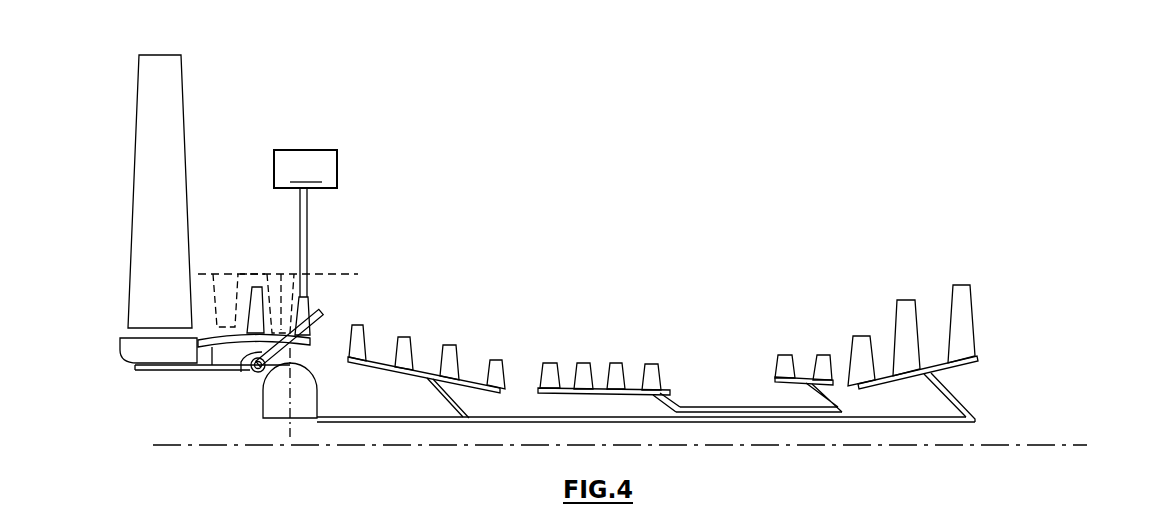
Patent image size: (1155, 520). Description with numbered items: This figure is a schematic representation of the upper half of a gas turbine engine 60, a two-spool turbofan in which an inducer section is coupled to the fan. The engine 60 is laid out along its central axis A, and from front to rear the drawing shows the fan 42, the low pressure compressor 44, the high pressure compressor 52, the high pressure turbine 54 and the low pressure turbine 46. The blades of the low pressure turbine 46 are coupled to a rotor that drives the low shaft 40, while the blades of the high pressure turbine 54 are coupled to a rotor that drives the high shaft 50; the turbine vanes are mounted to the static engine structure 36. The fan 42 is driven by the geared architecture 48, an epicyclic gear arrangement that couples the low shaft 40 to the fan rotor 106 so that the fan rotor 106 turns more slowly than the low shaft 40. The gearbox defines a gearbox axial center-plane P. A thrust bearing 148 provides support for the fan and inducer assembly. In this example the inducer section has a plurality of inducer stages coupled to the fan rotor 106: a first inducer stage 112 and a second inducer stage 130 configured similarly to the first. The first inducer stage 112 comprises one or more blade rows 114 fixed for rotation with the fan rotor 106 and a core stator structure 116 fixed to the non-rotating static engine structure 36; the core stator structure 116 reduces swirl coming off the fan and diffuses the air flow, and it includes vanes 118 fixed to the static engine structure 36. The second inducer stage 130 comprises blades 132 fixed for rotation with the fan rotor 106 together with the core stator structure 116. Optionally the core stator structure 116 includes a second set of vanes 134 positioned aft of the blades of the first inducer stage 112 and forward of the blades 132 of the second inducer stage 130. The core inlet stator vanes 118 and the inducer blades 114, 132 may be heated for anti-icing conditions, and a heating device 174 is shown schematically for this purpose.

The fan 42 is at (118, 297).
The vanes 118 is at (215, 297).
The core stator structure 116 is at (266, 262).
The second set of vanes 134 is at (283, 272).
The first inducer stage 112 is at (245, 257).
The blade rows 114 is at (258, 305).
The static engine structure 36 is at (315, 273).
The heating device 174 is at (305, 223).
The second inducer stage 130 is at (327, 294).
The blades 132 is at (312, 334).
The thrust bearing 148 is at (242, 376).
The fan rotor 106 is at (212, 368).
The geared architecture 48 is at (263, 398).
The gearbox axial center-plane P is at (290, 427).
The low shaft 40 is at (952, 420).
The low pressure compressor 44 is at (436, 318).
The high pressure compressor 52 is at (604, 330).
The high shaft 50 is at (828, 414).
The high pressure turbine 54 is at (802, 322).
The low pressure turbine 46 is at (995, 291).
The gas turbine engine 60 is at (676, 193).
The engine central axis A is at (1074, 445).